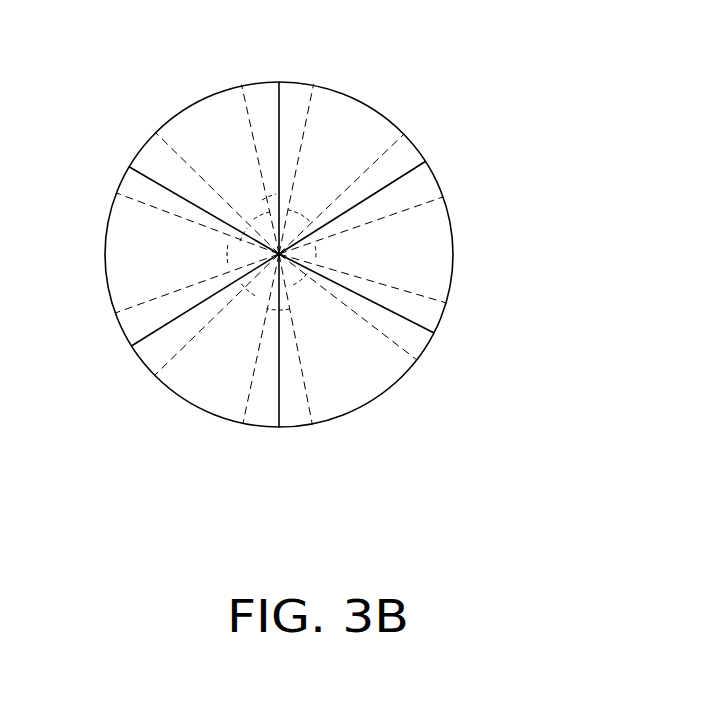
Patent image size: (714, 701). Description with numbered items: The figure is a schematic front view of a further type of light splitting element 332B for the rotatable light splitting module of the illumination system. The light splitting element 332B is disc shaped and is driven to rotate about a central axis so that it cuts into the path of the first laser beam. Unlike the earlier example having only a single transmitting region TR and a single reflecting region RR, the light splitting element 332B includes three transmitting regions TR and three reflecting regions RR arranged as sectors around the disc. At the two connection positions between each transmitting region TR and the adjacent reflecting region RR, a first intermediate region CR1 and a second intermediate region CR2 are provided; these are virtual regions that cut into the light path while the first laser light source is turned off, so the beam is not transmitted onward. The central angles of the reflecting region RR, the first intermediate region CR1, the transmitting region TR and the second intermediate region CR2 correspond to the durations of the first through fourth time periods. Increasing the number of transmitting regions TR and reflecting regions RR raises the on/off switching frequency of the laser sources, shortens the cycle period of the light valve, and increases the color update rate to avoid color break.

The light splitting element 332B is at (599, 449).
The reflecting region RR is at (203, 110).
The transmitting region TR is at (348, 104).
The first intermediate region CR1 is at (148, 128).
The second intermediate region CR2 is at (240, 76).